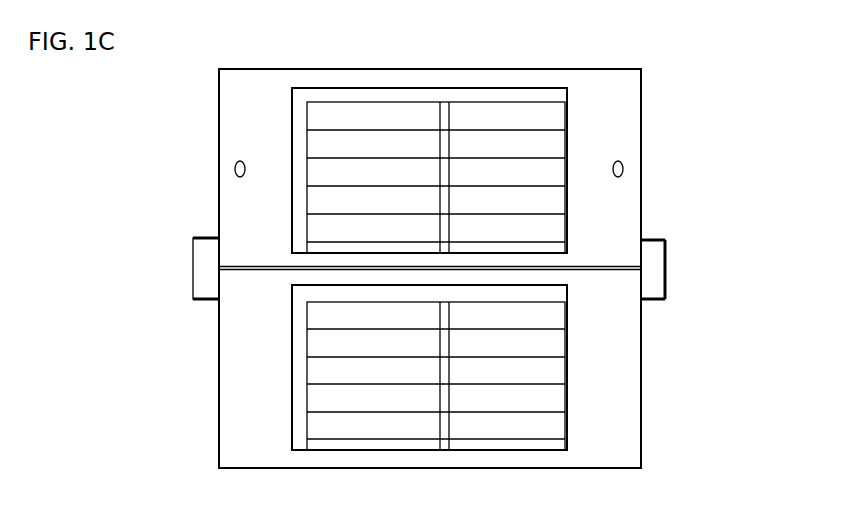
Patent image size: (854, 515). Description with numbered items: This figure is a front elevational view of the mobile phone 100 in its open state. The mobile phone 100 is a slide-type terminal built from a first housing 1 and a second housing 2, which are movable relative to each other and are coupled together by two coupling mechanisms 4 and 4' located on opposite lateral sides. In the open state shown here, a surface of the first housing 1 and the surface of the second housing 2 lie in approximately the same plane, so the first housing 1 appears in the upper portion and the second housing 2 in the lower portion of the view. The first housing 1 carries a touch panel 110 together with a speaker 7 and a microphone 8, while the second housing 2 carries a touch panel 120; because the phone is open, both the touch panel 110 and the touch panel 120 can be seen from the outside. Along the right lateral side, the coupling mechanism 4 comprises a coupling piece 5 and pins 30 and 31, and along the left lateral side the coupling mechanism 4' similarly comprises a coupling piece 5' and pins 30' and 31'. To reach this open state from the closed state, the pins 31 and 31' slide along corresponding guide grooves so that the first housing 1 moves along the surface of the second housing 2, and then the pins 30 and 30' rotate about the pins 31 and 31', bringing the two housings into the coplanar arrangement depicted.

The mobile phone 100 is at (702, 181).
The first housing 1 is at (594, 88).
The second housing 2 is at (627, 412).
The coupling mechanism 4 is at (682, 298).
The coupling mechanism 4' is at (173, 296).
The coupling piece 5 is at (681, 269).
The coupling piece 5' is at (177, 268).
The speaker 7 is at (235, 169).
The microphone 8 is at (623, 169).
The pin 30 is at (692, 229).
The pin 30' is at (168, 226).
The pin 31 is at (692, 293).
The pin 31' is at (165, 290).
The touch panel 110 is at (308, 90).
The touch panel 120 is at (318, 436).